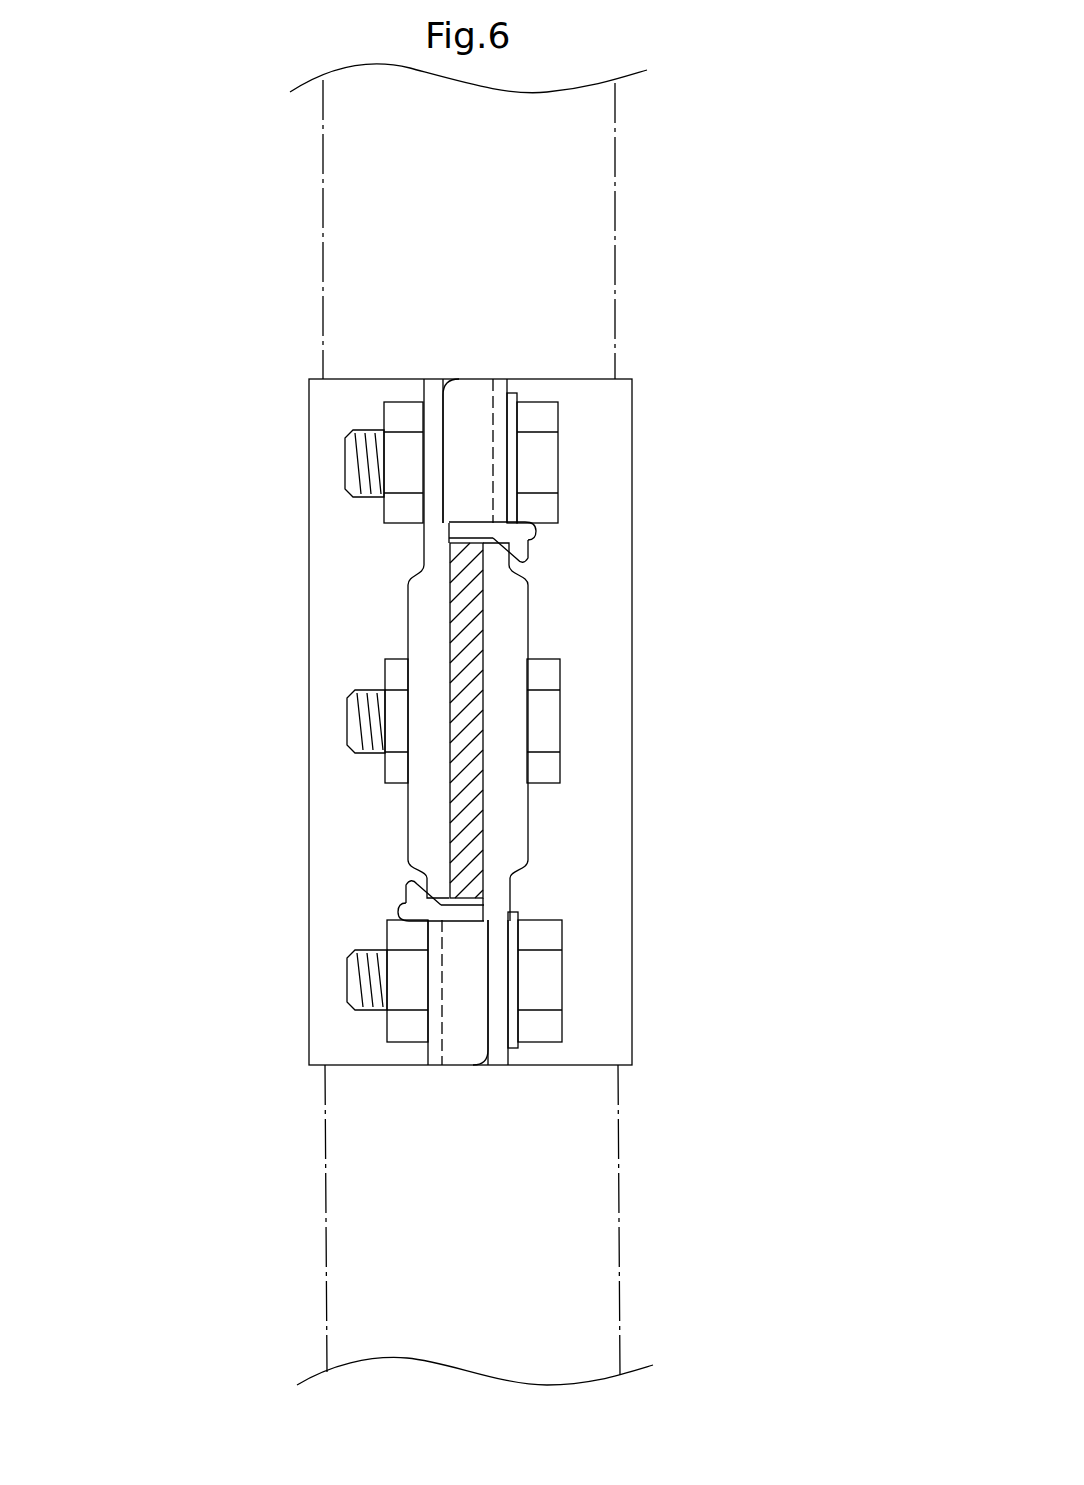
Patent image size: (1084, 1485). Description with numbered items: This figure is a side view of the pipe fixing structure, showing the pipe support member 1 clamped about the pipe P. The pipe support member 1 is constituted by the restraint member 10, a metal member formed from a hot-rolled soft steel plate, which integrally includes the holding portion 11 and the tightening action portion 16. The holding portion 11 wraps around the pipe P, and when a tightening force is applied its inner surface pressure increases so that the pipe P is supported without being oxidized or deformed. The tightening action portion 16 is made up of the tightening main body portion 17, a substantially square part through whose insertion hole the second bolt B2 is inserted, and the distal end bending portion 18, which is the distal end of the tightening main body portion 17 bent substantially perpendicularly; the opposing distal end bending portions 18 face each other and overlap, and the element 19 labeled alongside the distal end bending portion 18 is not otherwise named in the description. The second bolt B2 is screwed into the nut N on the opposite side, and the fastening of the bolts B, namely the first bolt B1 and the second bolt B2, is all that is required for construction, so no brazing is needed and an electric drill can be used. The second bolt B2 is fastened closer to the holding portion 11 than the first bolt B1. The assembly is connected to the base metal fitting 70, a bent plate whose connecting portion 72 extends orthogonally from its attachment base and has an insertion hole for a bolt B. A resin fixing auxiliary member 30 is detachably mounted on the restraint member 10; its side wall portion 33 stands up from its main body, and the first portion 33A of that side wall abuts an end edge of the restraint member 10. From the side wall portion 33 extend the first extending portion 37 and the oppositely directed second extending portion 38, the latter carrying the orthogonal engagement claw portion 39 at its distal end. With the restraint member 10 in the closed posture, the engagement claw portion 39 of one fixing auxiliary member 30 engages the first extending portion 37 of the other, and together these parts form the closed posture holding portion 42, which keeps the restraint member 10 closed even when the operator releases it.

The pipe support member 1 is at (207, 437).
The restraint member 10 is at (530, 694).
The holding portion 11 is at (612, 672).
The tightening action portion 16 is at (471, 728).
The tightening main body portion 17 is at (512, 393).
The distal end bending portion 18 is at (474, 726).
The bolt hole 19 is at (540, 301).
The fixing auxiliary member 30 is at (476, 713).
The side wall portion 33 is at (476, 720).
The first portion 33A is at (428, 615).
The first extending portion 37 is at (500, 556).
The second extending portion 38 is at (432, 545).
The engagement claw portion 39 is at (530, 537).
The closed posture holding portion 42 is at (499, 713).
The base metal fitting 70 is at (348, 720).
The connecting portion 72 is at (465, 830).
The bolt B is at (503, 723).
The first bolt B1 is at (548, 720).
The second bolt B2 is at (497, 723).
The nut N is at (392, 415).
The pipe P is at (323, 203).